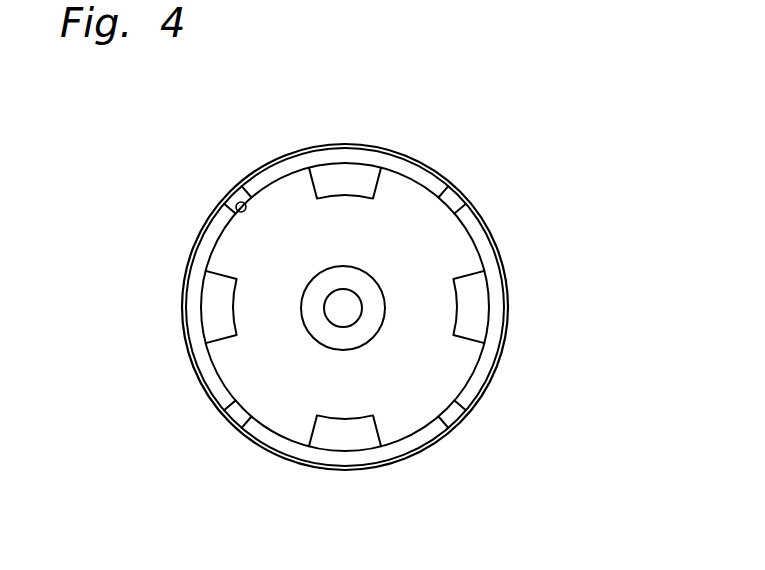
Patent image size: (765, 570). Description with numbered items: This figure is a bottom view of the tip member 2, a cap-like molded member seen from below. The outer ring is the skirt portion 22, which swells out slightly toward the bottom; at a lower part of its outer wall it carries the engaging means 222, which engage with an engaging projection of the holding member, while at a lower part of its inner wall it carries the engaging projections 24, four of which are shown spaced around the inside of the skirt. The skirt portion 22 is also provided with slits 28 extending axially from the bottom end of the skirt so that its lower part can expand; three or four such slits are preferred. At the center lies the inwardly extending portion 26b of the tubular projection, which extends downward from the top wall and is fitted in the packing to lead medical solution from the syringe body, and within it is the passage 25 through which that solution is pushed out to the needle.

The tip member 2 is at (445, 146).
The skirt portion 22 is at (504, 365).
The engaging means 222 is at (477, 220).
The engaging projections 24 is at (230, 308).
The passage 25 is at (360, 313).
The inwardly extending portion 26b is at (308, 337).
The slits 28 is at (228, 197).